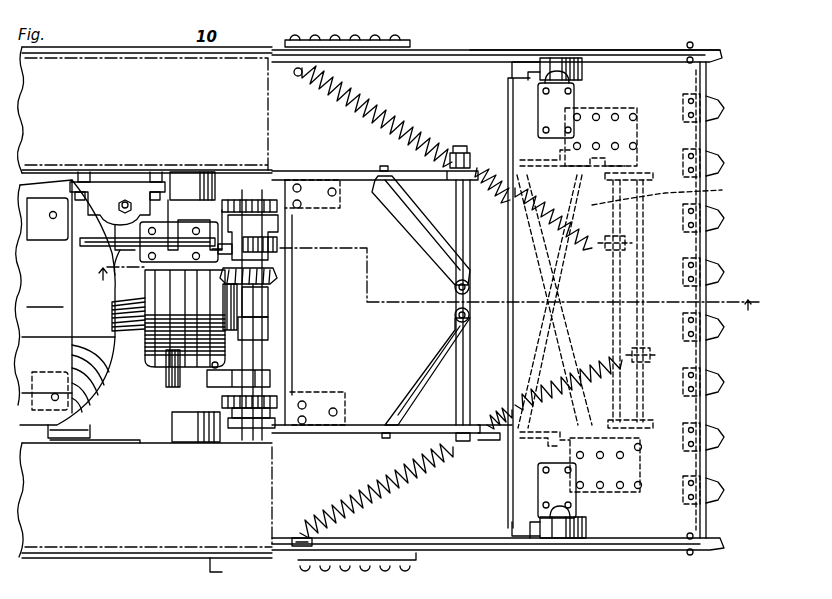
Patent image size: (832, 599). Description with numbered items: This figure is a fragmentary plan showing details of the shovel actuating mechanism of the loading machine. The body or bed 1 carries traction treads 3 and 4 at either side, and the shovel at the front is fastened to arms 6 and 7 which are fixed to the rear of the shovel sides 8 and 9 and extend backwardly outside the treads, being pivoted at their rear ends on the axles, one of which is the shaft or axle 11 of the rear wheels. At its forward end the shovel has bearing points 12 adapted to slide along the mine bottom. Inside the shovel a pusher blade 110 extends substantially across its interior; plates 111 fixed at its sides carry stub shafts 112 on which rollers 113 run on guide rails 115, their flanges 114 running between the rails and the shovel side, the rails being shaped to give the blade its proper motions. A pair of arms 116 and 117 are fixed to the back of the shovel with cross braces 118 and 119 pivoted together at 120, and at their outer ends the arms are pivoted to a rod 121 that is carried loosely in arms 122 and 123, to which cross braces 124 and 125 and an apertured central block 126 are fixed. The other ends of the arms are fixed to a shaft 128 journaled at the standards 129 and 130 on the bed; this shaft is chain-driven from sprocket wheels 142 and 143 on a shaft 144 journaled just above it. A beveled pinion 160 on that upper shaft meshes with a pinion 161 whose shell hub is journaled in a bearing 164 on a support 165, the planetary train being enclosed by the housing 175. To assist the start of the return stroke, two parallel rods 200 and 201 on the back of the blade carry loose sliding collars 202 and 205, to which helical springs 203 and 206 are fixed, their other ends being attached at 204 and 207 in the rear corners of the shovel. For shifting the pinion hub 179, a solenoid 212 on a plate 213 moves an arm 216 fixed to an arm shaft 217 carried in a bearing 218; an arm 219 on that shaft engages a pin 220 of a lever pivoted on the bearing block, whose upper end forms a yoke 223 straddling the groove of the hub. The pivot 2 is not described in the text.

The body or bed 1 is at (120, 410).
The housing cover 2 is at (90, 425).
The traction tread 3 is at (120, 522).
The traction tread 4 is at (345, 135).
The shovel arm 6 is at (221, 572).
The shovel arm 7 is at (288, 48).
The shovel side 8 is at (628, 552).
The shovel side 9 is at (455, 50).
The shaft or axle 11 is at (429, 279).
The bearing points 12 is at (720, 108).
The blade 110 is at (508, 94).
The plates 111 is at (568, 100).
The stub shafts 112 is at (558, 58).
The rollers 113 is at (585, 72).
The flanges 114 is at (552, 58).
The guide rails 115 is at (460, 70).
The arm 116 is at (495, 440).
The arm 117 is at (488, 160).
The cross brace 118 is at (577, 348).
The cross brace 119 is at (673, 192).
The pivot 120 is at (563, 293).
The rod 121 is at (470, 210).
The arm 122 is at (422, 436).
The arm 123 is at (364, 171).
The cross brace 124 is at (412, 365).
The cross brace 125 is at (425, 250).
The central block 126 is at (454, 298).
The shaft 128 is at (250, 426).
The standard 129 is at (278, 378).
The pedestal or bearing block 130 is at (268, 234).
The sprocket wheel 142 is at (300, 400).
The sprocket wheel 143 is at (222, 206).
The shaft 144 is at (280, 355).
The beveled pinion 160 is at (262, 298).
The pinion 161 is at (268, 336).
The bearing 164 is at (165, 375).
The support 165 is at (268, 318).
The housing 175 is at (160, 340).
The pinion hub 179 is at (270, 262).
The rod 200 is at (613, 273).
The rod 201 is at (645, 293).
The sliding collar 202 is at (625, 243).
The helical spring 203 is at (418, 126).
The spring attachment 204 is at (302, 80).
The sliding collar 205 is at (652, 355).
The helical spring 206 is at (412, 490).
The spring attachment 207 is at (304, 530).
The solenoid 212 is at (130, 182).
The plate 213 is at (98, 182).
The arm 216 is at (112, 230).
The arm shaft 217 is at (118, 250).
The bearing 218 is at (180, 182).
The arm 219 is at (240, 200).
The pin 220 is at (270, 280).
The yoke 223 is at (232, 250).